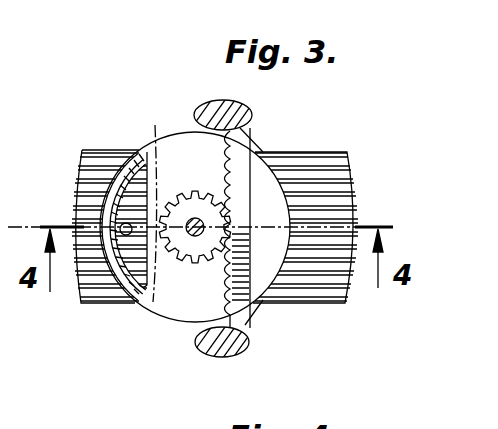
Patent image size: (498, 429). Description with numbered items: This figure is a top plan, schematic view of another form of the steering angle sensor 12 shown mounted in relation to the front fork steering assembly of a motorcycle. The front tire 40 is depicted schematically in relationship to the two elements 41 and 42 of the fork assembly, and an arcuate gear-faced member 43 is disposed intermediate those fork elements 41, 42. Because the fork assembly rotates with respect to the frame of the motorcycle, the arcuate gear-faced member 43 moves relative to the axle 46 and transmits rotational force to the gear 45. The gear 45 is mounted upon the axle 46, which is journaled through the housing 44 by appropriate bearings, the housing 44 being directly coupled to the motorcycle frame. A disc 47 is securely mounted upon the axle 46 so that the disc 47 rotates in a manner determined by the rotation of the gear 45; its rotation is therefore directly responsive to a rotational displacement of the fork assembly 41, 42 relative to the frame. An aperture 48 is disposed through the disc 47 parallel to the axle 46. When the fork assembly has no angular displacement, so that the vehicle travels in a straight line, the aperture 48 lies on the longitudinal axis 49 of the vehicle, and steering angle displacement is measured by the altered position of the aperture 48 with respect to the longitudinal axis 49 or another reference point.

The steering angle sensor 12 is at (160, 122).
The front tire 40 is at (342, 172).
The fork assembly element 41 is at (248, 108).
The fork assembly element 42 is at (247, 353).
The arcuate gear-faced member 43 is at (246, 163).
The housing 44 is at (268, 268).
The gear 45 is at (196, 250).
The axle 46 is at (196, 218).
The disc 47 is at (132, 190).
The aperture 48 is at (125, 236).
The longitudinal axis 49 is at (155, 152).